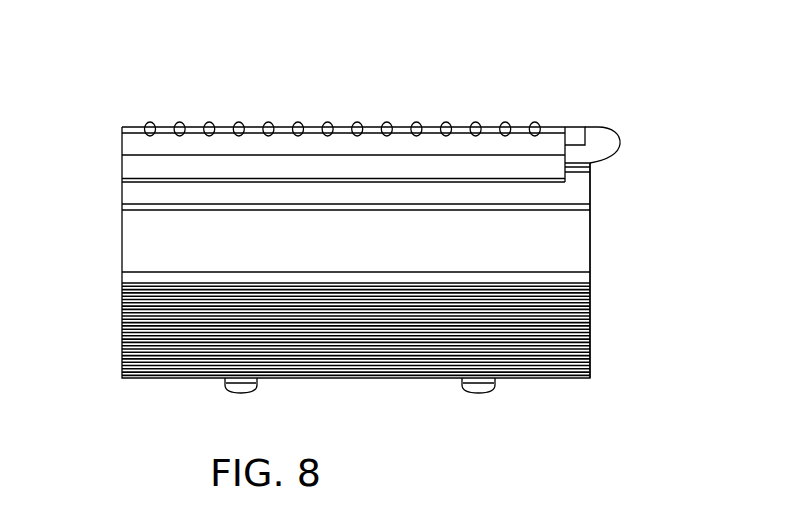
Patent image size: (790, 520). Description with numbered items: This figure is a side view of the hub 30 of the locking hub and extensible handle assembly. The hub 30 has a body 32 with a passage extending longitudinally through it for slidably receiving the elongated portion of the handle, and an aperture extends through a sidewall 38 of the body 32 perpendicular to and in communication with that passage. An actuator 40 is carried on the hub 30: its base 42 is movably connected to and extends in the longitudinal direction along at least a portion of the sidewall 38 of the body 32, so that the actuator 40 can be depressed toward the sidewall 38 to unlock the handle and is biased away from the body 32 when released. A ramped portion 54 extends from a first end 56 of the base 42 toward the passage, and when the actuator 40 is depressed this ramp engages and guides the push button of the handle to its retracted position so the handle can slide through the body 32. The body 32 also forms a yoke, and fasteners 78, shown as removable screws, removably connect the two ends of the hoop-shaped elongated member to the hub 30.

The hub 30 is at (570, 378).
The body 32 is at (577, 257).
The sidewall 38 is at (580, 190).
The actuator 40 is at (253, 125).
The base 42 is at (130, 143).
The ramped portion 54 is at (607, 160).
The first end 56 is at (555, 135).
The fasteners 78 is at (228, 392).